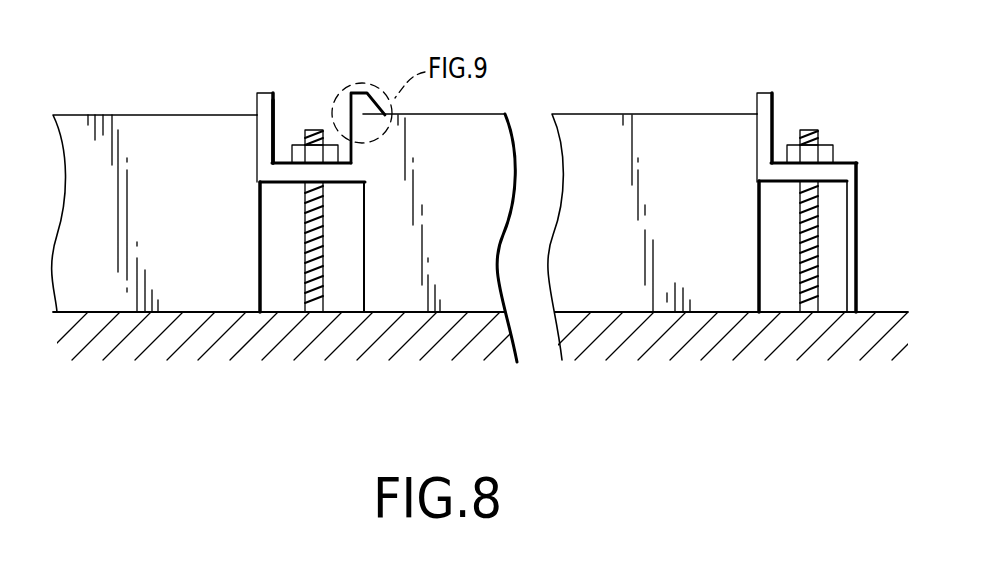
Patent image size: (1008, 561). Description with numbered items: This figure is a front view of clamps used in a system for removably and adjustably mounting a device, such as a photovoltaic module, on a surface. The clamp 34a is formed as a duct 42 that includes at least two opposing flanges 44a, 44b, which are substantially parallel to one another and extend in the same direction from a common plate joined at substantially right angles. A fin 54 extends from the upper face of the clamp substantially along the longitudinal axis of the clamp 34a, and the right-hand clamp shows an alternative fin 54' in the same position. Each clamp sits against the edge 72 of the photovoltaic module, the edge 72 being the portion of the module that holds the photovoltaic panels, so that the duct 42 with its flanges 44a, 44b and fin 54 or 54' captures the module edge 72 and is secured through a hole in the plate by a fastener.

The fin 54 is at (240, 94).
The fin 54' is at (749, 94).
The clamp 34a is at (292, 92).
The duct 42 is at (287, 122).
The opposing flange 44a is at (270, 138).
The opposing flange 44b is at (350, 178).
The edge 72 is at (222, 297).